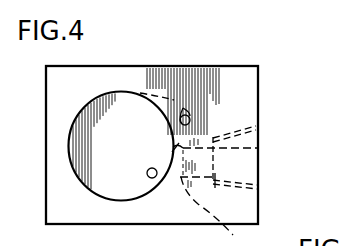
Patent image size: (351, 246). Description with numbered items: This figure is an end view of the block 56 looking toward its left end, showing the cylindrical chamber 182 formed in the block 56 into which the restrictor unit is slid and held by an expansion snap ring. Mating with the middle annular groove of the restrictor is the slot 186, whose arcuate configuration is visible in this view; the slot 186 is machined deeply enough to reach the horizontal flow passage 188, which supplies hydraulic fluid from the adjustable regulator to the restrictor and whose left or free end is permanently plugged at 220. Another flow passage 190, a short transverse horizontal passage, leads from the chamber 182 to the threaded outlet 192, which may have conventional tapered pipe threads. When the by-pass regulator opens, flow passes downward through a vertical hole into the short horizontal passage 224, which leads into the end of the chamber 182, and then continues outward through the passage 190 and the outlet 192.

The block 56 is at (227, 205).
The cylindrical chamber 182 is at (126, 138).
The slot 186 is at (257, 148).
The horizontal flow passage 188 is at (183, 110).
The flow passage 190 is at (233, 235).
The outlet 192 is at (262, 185).
The plug 220 is at (240, 116).
The short horizontal passage 224 is at (153, 179).